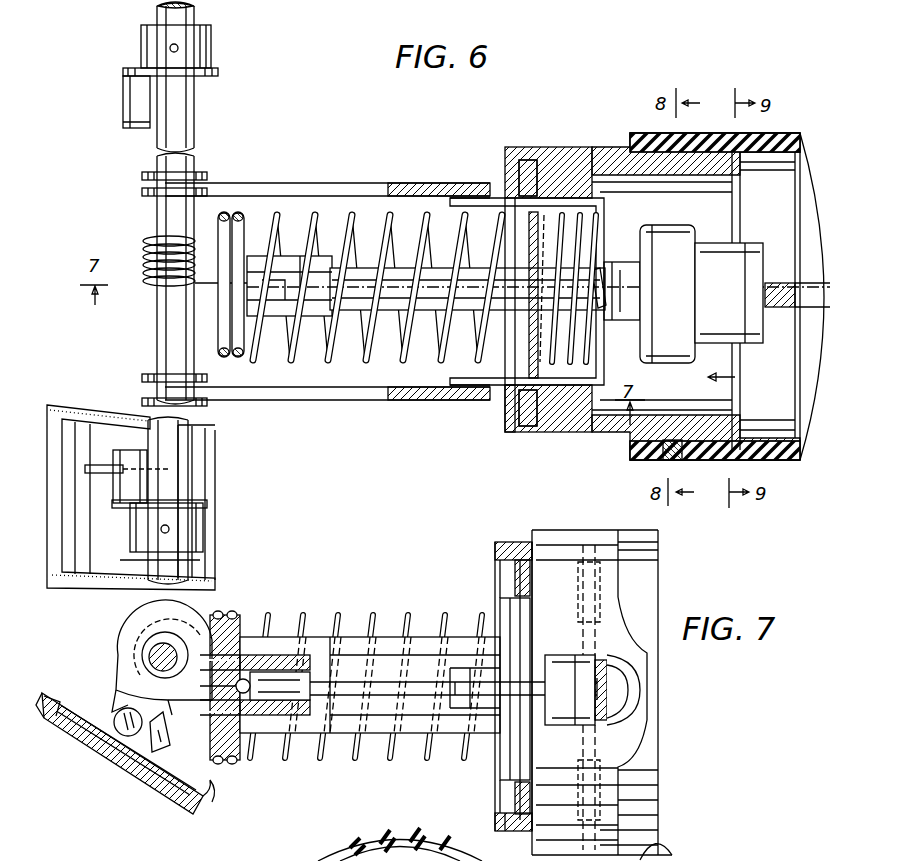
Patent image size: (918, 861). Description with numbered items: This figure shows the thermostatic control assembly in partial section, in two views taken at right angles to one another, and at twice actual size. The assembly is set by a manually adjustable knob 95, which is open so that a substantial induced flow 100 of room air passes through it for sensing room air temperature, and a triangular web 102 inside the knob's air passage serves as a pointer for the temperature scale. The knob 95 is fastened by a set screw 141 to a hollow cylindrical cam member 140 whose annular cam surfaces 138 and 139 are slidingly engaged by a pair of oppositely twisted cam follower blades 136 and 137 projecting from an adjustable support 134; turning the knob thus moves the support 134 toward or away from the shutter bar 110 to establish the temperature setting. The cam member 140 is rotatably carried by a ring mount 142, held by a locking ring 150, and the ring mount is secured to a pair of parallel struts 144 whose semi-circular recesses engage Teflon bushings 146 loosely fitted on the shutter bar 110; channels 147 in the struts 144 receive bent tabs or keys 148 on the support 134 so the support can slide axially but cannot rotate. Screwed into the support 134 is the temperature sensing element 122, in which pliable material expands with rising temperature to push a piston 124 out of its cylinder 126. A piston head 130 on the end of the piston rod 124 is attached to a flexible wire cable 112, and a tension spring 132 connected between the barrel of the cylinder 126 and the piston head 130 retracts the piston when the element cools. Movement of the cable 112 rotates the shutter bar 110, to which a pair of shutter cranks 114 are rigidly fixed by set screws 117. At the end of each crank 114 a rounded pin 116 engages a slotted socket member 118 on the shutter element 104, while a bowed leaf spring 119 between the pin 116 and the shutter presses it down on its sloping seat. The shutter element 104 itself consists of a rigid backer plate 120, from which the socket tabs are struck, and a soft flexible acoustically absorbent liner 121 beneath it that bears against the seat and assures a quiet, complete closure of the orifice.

In FIG. 6, the manually adjustable knob 95 is at (766, 462).
In FIG. 7, the manually adjustable knob 95 is at (420, 840).
In FIG. 6, the induced flow of room air 100 is at (740, 380).
In FIG. 6, the triangular web 102 is at (822, 370).
In FIG. 7, the shutter element 104 is at (216, 804).
In FIG. 6, the shutter bar 110 is at (190, 124).
In FIG. 7, the shutter bar 110 is at (158, 650).
In FIG. 6, the flexible wire cable 112 is at (145, 275).
In FIG. 7, the flexible wire cable 112 is at (196, 690).
In FIG. 6, the shutter crank 114 is at (130, 68).
In FIG. 7, the shutter crank 114 is at (123, 683).
In FIG. 6, the pin 116 is at (124, 118).
In FIG. 7, the pin 116 is at (126, 708).
In FIG. 6, the set screw 117 is at (178, 48).
In FIG. 6, the slotted socket member 118 is at (98, 465).
In FIG. 7, the slotted socket member 118 is at (166, 747).
In FIG. 7, the bowed leaf spring 119 is at (66, 700).
In FIG. 7, the backer plate 120 is at (208, 792).
In FIG. 7, the acoustically absorbent liner 121 is at (172, 790).
In FIG. 6, the temperature sensing element 122 is at (668, 225).
In FIG. 7, the temperature sensing element 122 is at (622, 650).
In FIG. 6, the piston 124 is at (368, 258).
In FIG. 7, the piston 124 is at (398, 686).
In FIG. 6, the cylinder 126 is at (410, 252).
In FIG. 6, the piston head 130 is at (250, 240).
In FIG. 7, the piston head 130 is at (301, 752).
In FIG. 6, the tension spring 132 is at (370, 360).
In FIG. 7, the tension spring 132 is at (352, 760).
In FIG. 6, the adjustable support 134 is at (598, 262).
In FIG. 7, the adjustable support 134 is at (566, 642).
In FIG. 6, the cam follower blade 136 is at (602, 318).
In FIG. 7, the cam follower blade 136 is at (606, 545).
In FIG. 7, the cam follower blade 137 is at (606, 832).
In FIG. 6, the annular cam surface 138 is at (606, 150).
In FIG. 6, the annular cam surface 139 is at (576, 432).
In FIG. 6, the cam member 140 is at (658, 418).
In FIG. 7, the cam member 140 is at (538, 545).
In FIG. 6, the set screw 141 is at (664, 455).
In FIG. 6, the ring mount 142 is at (516, 432).
In FIG. 7, the ring mount 142 is at (520, 830).
In FIG. 6, the strut 144 is at (318, 183).
In FIG. 7, the strut 144 is at (380, 645).
In FIG. 6, the Teflon bushing 146 is at (200, 172).
In FIG. 7, the channel 147 is at (456, 668).
In FIG. 6, the key 148 is at (580, 381).
In FIG. 7, the key 148 is at (490, 742).
In FIG. 6, the locking ring 150 is at (516, 412).
In FIG. 7, the locking ring 150 is at (512, 572).